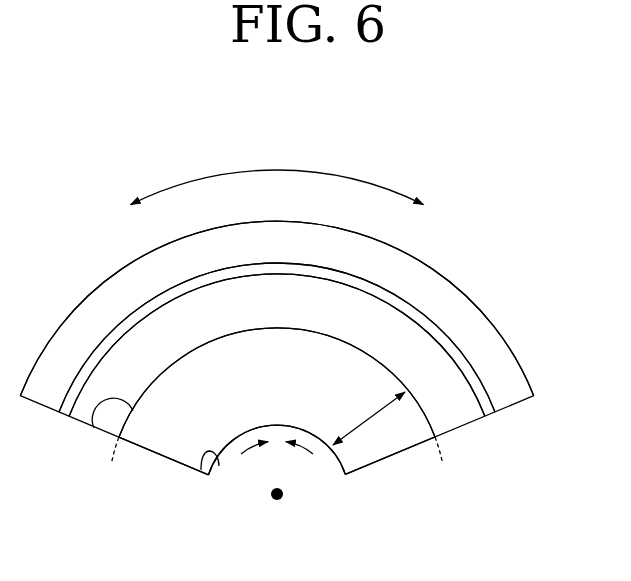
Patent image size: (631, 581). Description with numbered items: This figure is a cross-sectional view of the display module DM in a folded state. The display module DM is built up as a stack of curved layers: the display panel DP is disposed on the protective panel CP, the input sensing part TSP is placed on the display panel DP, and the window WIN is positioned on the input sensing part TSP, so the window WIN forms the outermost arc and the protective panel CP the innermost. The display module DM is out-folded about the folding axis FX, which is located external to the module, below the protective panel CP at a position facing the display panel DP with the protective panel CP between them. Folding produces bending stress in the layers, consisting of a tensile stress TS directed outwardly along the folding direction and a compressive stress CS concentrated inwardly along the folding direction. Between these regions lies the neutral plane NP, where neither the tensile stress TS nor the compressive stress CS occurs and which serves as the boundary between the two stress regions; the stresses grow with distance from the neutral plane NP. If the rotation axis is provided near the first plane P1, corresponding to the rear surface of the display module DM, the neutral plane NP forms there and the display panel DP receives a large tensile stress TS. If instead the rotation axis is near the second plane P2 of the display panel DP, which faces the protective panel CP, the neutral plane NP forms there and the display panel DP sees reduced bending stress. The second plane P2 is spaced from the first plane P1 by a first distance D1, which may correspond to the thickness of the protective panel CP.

The display module DM is at (548, 192).
The window WIN is at (512, 393).
The input sensing part TSP is at (485, 407).
The display panel DP is at (457, 417).
The protective panel CP is at (385, 448).
The compressive stress CS is at (277, 451).
The folding axis FX is at (277, 509).
The neutral plane NP is at (270, 464).
The first plane P1 is at (201, 470).
The second plane P2 is at (94, 428).
The tensile stress TS is at (277, 172).
The first distance D1 is at (369, 418).